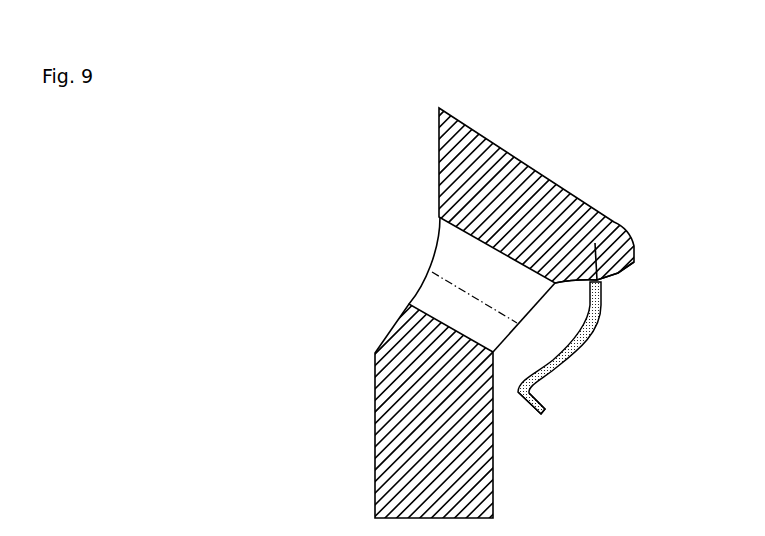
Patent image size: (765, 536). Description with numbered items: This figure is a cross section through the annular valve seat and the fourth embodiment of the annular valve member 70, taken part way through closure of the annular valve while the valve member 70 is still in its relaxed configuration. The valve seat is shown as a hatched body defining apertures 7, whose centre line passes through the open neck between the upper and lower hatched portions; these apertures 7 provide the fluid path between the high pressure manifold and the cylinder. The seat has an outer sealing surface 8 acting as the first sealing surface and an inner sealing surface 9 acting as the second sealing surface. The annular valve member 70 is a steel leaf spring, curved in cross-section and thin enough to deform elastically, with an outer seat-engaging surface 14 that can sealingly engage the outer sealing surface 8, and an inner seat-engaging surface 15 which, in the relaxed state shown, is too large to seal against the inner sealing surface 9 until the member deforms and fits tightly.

The apertures 7 is at (438, 283).
The outer sealing surface 8 is at (612, 221).
The inner sealing surface 9 is at (493, 380).
The outer seat-engaging surface 14 is at (600, 280).
The inner seat-engaging surface 15 is at (518, 393).
The annular valve member 70 is at (576, 352).